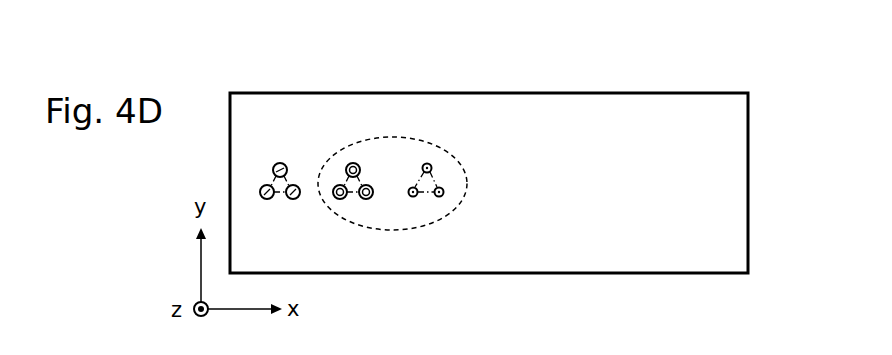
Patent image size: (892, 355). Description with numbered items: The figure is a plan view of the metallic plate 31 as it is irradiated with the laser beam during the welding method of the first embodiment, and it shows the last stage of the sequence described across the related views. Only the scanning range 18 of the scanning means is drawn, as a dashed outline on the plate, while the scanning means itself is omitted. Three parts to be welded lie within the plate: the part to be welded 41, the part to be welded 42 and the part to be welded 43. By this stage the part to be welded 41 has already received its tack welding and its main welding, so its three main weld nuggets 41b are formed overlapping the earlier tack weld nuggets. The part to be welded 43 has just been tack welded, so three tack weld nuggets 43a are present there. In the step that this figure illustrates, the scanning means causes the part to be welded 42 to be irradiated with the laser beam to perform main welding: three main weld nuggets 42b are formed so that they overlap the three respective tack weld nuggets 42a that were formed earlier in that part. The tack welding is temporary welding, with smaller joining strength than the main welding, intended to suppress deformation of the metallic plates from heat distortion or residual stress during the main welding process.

The metallic plate 31 is at (748, 185).
The scanning range 18 is at (436, 147).
The part to be welded 41 is at (276, 200).
The main weld nugget 41b is at (282, 163).
The part to be welded 42 is at (352, 200).
The tack weld nugget 42a is at (370, 185).
The main weld nugget 42b is at (352, 163).
The part to be welded 43 is at (421, 198).
The tack weld nugget 43a is at (442, 190).